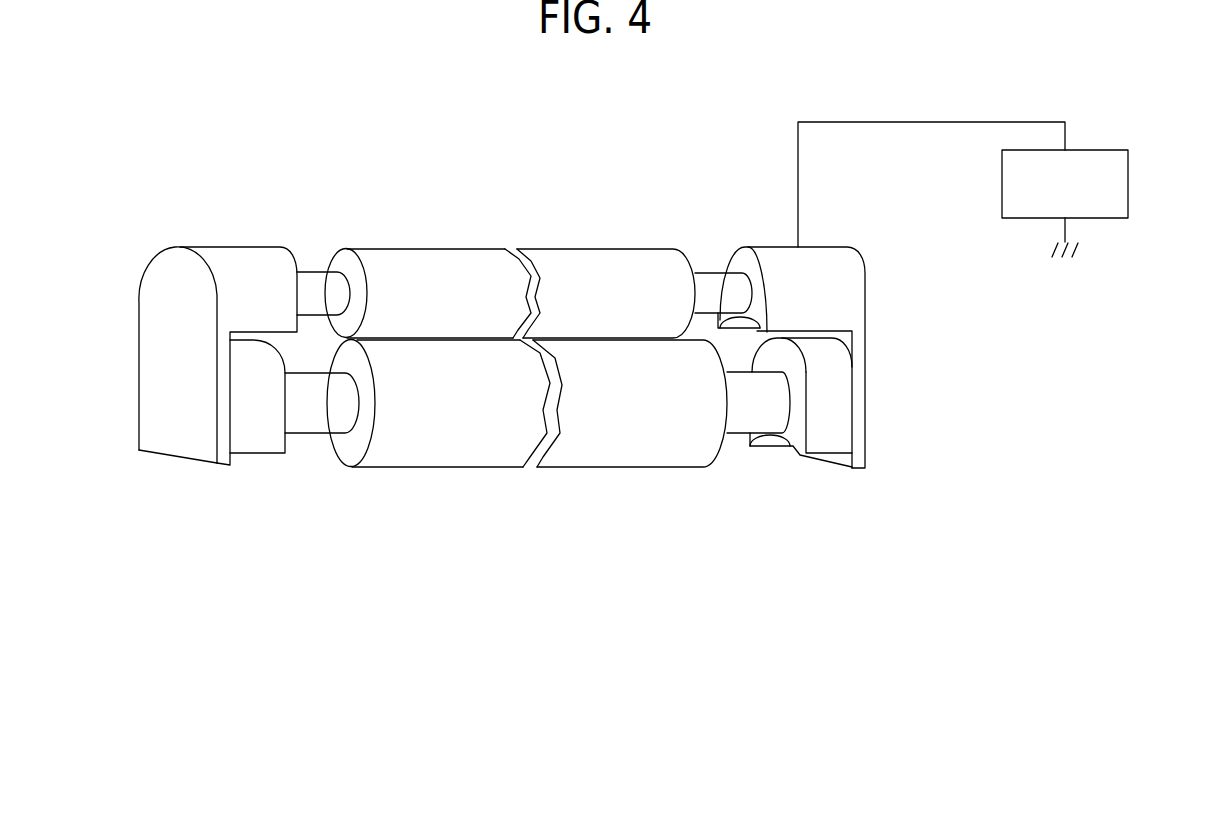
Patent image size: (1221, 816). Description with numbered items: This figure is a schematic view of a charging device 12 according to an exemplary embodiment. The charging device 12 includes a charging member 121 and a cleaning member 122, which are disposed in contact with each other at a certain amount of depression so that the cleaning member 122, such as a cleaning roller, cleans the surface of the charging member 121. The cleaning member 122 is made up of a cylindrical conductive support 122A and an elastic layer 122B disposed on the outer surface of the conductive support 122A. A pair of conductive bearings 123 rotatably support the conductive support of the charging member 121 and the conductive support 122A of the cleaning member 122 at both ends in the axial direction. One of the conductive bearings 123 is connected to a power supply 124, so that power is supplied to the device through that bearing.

The charging device 12 is at (642, 147).
The charging member 121 is at (443, 457).
The cleaning member 122 is at (453, 263).
The conductive support 122A is at (318, 282).
The elastic layer 122B is at (382, 263).
The conductive bearings 123 is at (212, 250).
The power supply 124 is at (1128, 180).